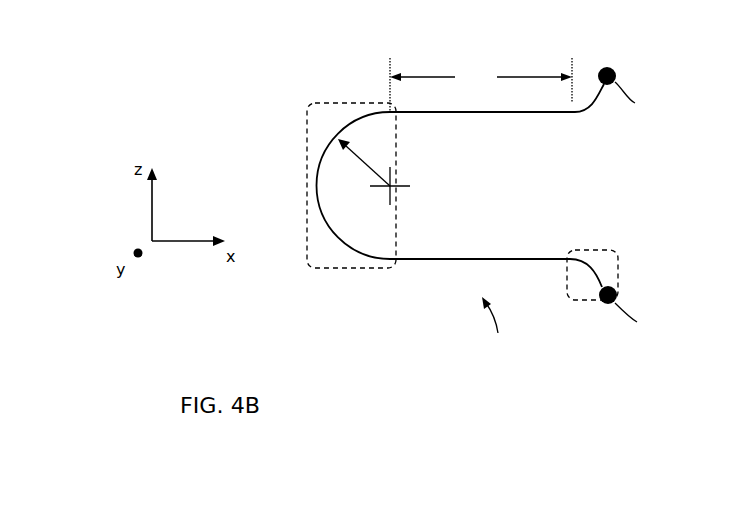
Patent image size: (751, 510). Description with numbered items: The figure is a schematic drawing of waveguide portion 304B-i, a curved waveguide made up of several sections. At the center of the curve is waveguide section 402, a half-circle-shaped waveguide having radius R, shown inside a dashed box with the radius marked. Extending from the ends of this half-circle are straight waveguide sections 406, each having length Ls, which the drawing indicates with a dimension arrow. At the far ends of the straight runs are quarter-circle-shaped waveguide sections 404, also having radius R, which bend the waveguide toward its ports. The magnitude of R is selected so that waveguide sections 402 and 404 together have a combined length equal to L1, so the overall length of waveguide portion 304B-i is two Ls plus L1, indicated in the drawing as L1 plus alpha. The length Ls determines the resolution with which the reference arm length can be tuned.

The waveguide portion 304B-i is at (319, 60).
The waveguide section 402 is at (308, 122).
The waveguide section 404 is at (617, 258).
The waveguide section 406 is at (473, 113).